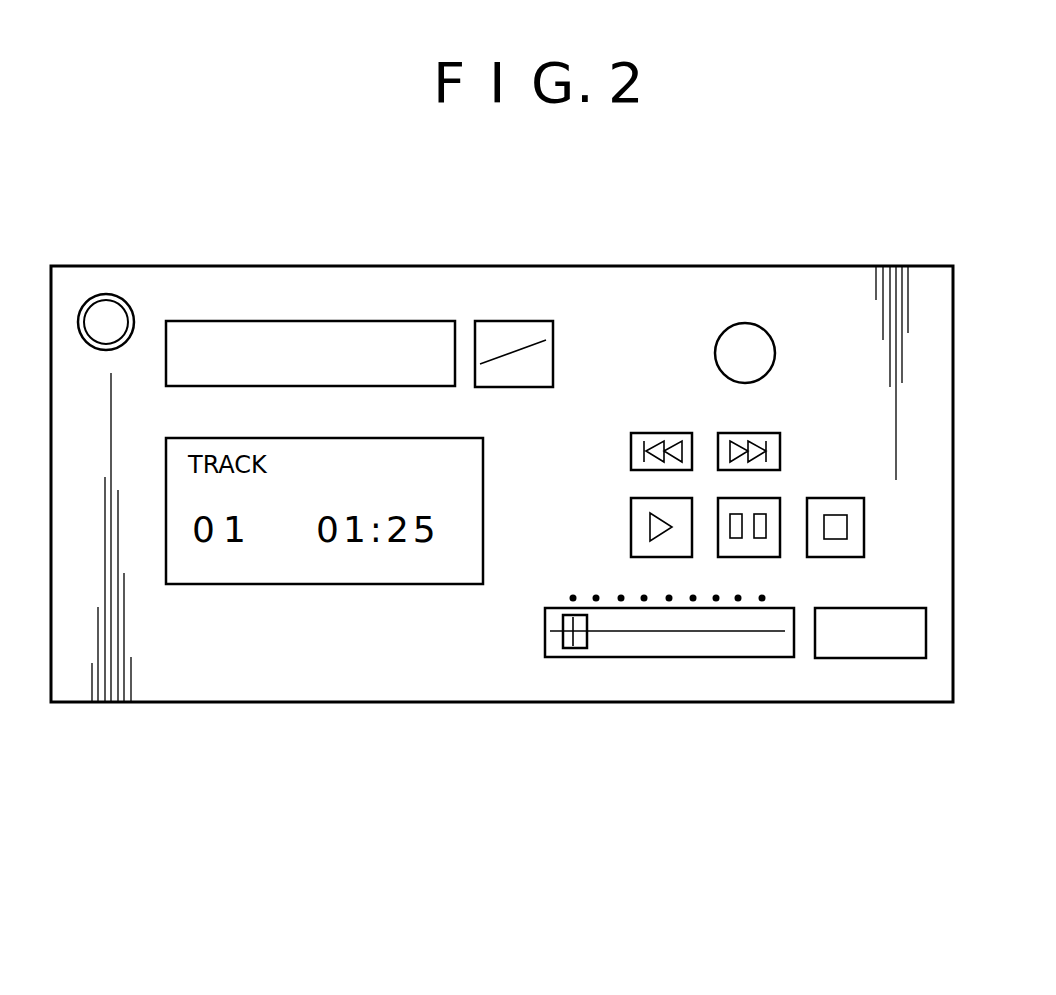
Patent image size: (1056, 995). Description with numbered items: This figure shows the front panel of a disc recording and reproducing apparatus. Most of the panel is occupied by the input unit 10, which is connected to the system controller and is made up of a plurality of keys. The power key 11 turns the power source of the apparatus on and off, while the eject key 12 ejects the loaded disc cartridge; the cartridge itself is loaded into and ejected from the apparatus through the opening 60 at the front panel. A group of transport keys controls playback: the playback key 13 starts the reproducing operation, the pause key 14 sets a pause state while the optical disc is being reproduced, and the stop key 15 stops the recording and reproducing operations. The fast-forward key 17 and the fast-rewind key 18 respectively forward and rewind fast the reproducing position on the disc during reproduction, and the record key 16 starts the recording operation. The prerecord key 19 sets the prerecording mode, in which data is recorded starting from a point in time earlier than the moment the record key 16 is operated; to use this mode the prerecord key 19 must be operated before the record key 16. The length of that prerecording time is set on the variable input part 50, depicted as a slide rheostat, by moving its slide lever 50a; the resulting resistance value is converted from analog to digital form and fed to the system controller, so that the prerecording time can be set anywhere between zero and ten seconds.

The input unit 10 is at (905, 392).
The power key 11 is at (108, 308).
The opening 60 is at (325, 332).
The eject key 12 is at (526, 321).
The record key 16 is at (752, 329).
The fast-forward key 17 is at (655, 433).
The fast-rewind key 18 is at (772, 433).
The playback key 13 is at (631, 517).
The pause key 14 is at (772, 498).
The stop key 15 is at (866, 520).
The variable input part 50 is at (661, 650).
The slide lever 50a is at (573, 648).
The prerecord key 19 is at (926, 632).